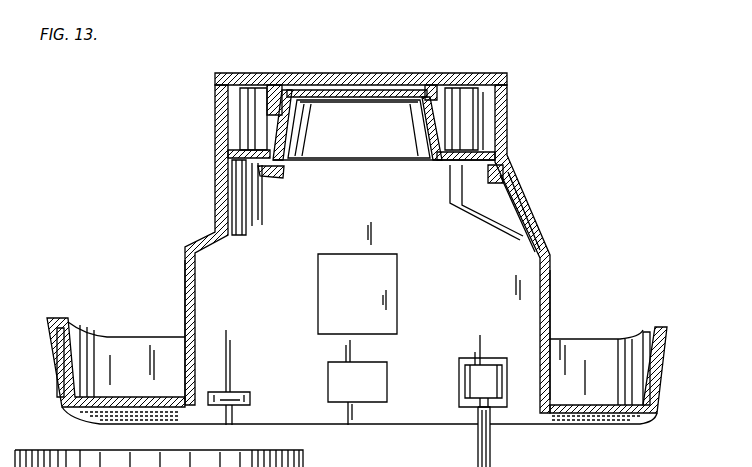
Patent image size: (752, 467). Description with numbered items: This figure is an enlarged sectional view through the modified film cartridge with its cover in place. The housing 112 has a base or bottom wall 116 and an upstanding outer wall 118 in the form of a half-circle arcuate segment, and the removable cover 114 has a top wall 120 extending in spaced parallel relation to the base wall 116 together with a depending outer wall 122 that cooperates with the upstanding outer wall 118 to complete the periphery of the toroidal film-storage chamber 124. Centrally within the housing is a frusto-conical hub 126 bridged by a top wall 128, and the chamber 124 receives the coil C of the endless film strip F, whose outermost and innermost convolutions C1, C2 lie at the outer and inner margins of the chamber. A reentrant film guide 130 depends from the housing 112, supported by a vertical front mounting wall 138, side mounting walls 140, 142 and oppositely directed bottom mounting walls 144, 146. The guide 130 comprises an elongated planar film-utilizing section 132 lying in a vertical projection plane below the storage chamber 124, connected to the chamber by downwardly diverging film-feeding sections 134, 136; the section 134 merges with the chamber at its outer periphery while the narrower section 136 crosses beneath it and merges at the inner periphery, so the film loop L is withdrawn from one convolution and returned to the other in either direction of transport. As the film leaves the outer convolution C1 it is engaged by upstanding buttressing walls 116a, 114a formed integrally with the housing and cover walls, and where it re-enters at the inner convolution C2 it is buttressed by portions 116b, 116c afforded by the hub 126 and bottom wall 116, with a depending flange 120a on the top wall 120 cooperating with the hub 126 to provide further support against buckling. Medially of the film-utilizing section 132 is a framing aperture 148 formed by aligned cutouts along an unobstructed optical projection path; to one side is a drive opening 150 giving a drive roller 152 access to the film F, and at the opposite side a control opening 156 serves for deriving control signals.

The housing 112 is at (213, 128).
The removable cover 114 is at (398, 70).
The buttressing wall 114a is at (508, 172).
The base wall 116 is at (228, 168).
The buttressing wall 116a is at (487, 172).
The buttressing 116b is at (280, 182).
The buttressing 116c is at (258, 192).
The upstanding outer wall 118 is at (213, 106).
The top wall 120 is at (305, 70).
The depending flange 120a is at (283, 88).
The depending outer wall 122 is at (508, 90).
The toroidal film-storage chamber 124 is at (487, 70).
The frusto-conical hub 126 is at (428, 128).
The top wall 128 is at (368, 102).
The reentrant film guide 130 is at (136, 335).
The film-utilizing section 132 is at (568, 338).
The film-feeding section 134 is at (58, 316).
The film-feeding section 136 is at (660, 327).
The front mounting wall 138 is at (465, 272).
The side mounting wall 140 is at (193, 288).
The side mounting wall 142 is at (552, 280).
The bottom mounting wall 144 is at (128, 398).
The bottom mounting wall 146 is at (590, 405).
The framing aperture 148 is at (372, 402).
The drive opening 150 is at (459, 383).
The drive roller 152 is at (487, 370).
The control opening 156 is at (232, 392).
The film strip F is at (245, 85).
The loop L is at (55, 340).
The coil C is at (455, 85).
The outermost convolution C1 is at (243, 102).
The innermost convolution C2 is at (288, 168).